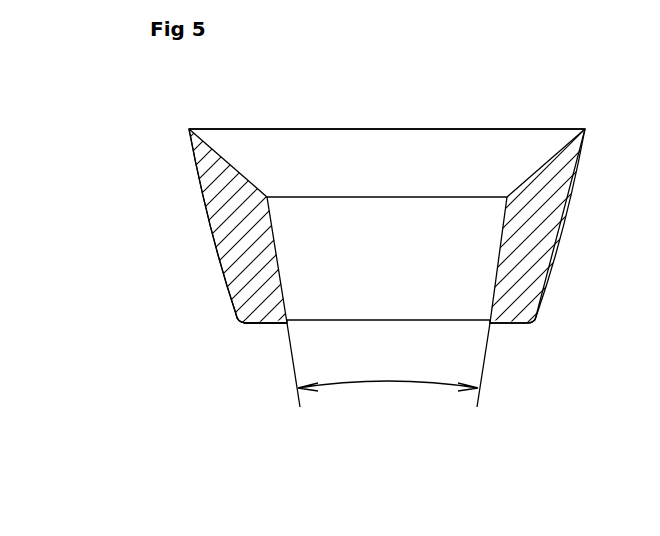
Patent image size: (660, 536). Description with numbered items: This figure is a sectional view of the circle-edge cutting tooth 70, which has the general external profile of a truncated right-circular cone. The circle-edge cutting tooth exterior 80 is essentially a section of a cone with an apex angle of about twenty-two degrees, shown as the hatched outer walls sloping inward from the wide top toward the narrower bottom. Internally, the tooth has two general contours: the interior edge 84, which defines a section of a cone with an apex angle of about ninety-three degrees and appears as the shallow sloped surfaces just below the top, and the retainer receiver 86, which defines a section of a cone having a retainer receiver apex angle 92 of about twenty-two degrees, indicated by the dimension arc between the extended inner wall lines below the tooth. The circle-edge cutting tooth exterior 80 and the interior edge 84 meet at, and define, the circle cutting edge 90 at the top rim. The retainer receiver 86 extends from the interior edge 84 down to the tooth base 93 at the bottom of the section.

The circle-edge cutting tooth 70 is at (423, 83).
The circle cutting edge 90 is at (516, 128).
The interior edge 84 is at (252, 183).
The circle-edge cutting tooth exterior 80 is at (205, 214).
The retainer receiver 86 is at (497, 263).
The tooth base 93 is at (255, 328).
The retainer receiver apex angle 92 is at (384, 383).